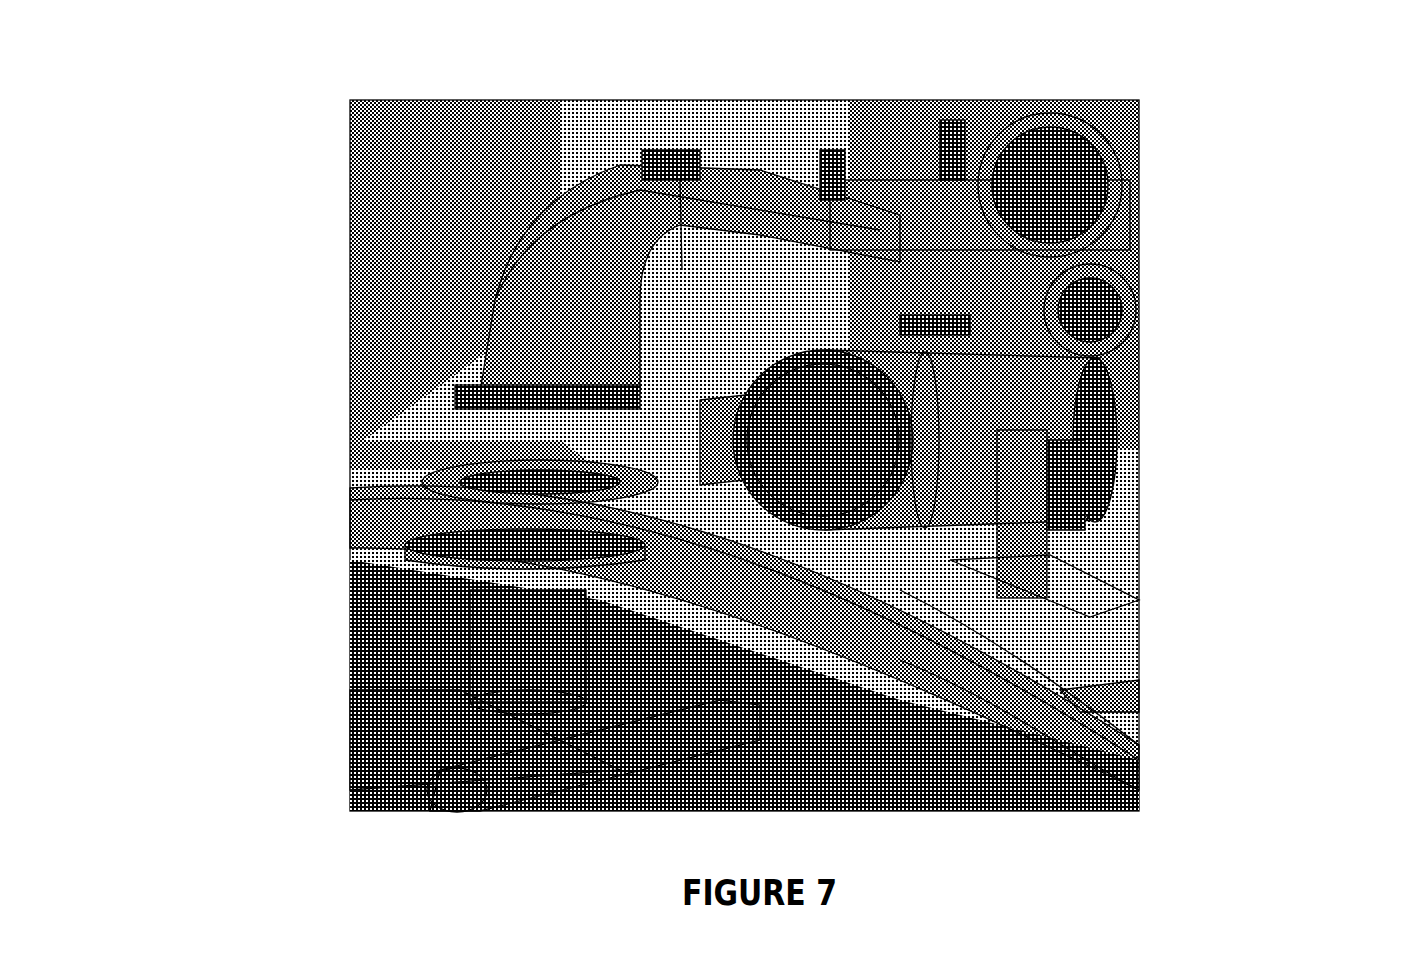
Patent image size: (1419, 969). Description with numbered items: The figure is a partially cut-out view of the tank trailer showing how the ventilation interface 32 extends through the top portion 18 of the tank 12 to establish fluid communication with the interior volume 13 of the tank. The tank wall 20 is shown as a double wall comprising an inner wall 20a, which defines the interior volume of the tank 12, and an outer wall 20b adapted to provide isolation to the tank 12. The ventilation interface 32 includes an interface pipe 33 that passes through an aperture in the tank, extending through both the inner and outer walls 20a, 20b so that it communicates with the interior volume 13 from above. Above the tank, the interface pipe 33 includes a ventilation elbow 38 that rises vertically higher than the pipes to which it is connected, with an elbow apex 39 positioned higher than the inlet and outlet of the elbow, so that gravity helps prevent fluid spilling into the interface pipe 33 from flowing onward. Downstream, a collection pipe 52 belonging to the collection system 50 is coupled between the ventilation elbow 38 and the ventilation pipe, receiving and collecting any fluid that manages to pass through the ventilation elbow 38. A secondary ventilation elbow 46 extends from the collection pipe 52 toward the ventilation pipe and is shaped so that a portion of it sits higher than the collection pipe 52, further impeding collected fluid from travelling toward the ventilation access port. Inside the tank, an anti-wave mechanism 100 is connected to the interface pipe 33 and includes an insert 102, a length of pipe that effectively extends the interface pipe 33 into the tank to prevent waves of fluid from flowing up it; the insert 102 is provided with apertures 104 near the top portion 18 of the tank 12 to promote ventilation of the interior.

The tank 12 is at (1125, 590).
The interior volume 13 is at (735, 795).
The top portion 18 is at (418, 417).
The tank wall 20 is at (397, 472).
The inner wall 20a is at (1035, 778).
The outer wall 20b is at (1110, 748).
The ventilation interface 32 is at (356, 548).
The interface pipe 33 is at (450, 518).
The ventilation elbow 38 is at (510, 290).
The elbow apex 39 is at (668, 173).
The secondary ventilation elbow 46 is at (1085, 152).
The collection system 50 is at (1115, 402).
The collection pipe 52 is at (1130, 328).
The anti-wave mechanism 100 is at (350, 713).
The insert 102 is at (405, 636).
The apertures 104 is at (1128, 698).